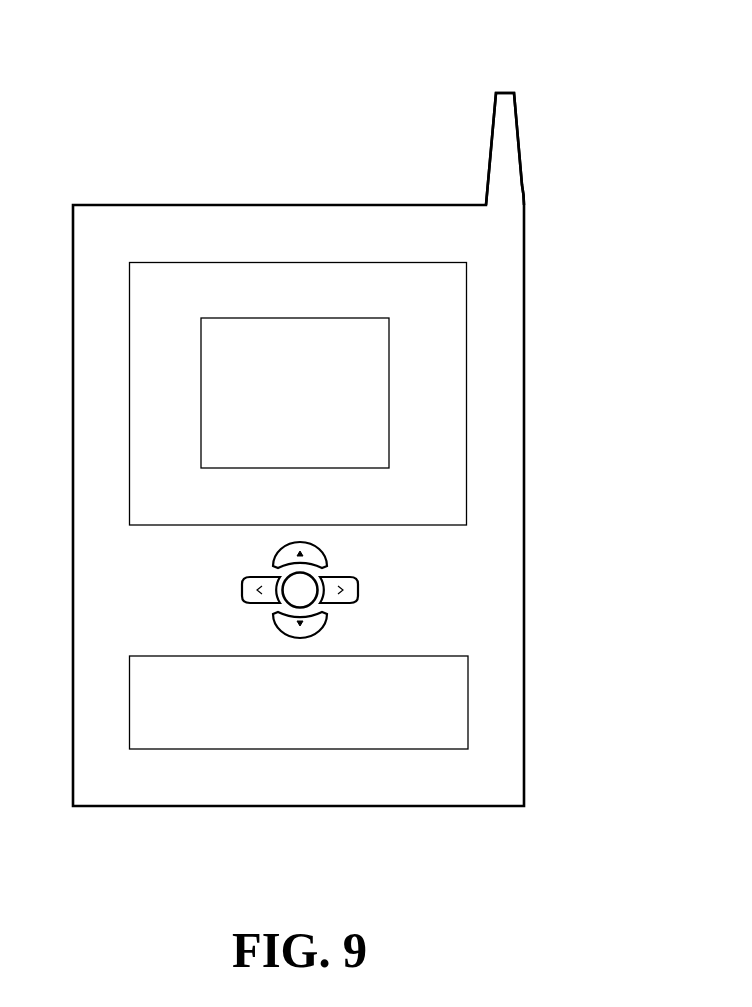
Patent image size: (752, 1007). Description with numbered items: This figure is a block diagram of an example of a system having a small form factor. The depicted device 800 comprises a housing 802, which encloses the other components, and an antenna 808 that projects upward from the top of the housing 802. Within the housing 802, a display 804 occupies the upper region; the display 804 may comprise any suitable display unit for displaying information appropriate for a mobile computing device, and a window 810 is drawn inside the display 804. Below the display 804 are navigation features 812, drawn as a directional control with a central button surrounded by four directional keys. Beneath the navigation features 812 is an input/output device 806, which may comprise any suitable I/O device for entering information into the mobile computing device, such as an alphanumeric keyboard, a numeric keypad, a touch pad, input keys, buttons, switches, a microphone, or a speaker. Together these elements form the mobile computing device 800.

The device 800 is at (147, 104).
The housing 802 is at (524, 460).
The display 804 is at (467, 280).
The input/output (I/O) device 806 is at (468, 690).
The antenna 808 is at (494, 117).
The display window 810 is at (389, 374).
The navigation features 812 is at (374, 615).